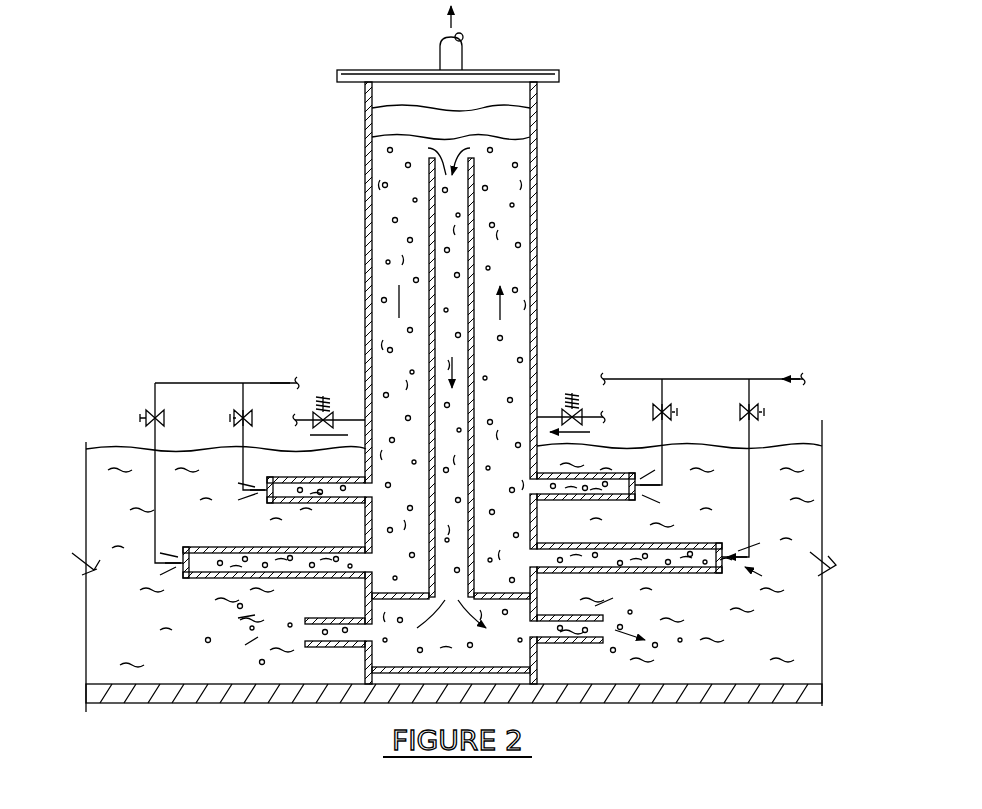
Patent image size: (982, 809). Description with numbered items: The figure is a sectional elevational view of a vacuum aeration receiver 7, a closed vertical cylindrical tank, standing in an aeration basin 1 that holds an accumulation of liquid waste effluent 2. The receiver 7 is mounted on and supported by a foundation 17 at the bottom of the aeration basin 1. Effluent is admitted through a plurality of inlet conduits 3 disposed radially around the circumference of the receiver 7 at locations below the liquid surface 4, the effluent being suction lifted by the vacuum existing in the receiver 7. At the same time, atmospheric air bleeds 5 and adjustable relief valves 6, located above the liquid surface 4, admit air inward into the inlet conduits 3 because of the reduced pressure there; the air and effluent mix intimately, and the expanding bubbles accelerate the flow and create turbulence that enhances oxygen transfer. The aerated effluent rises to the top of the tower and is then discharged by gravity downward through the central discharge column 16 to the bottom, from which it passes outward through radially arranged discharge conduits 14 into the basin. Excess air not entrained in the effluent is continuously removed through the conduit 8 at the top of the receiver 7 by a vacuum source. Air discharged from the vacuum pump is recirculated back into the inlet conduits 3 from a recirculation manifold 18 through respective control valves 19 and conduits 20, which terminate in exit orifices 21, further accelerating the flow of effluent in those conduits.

The aeration basin 1 is at (86, 517).
The liquid waste effluent 2 is at (222, 467).
The inlet conduit 3 is at (320, 541).
The liquid surface 4 is at (120, 447).
The atmospheric air bleed 5 is at (449, 418).
The adjustable relief valve 6 is at (323, 396).
The vacuum aeration receiver 7 is at (365, 222).
The conduit 8 is at (440, 55).
The discharge conduit 14 is at (322, 648).
The central discharge column 16 is at (473, 262).
The foundation 17 is at (530, 678).
The recirculation manifold 18 is at (262, 383).
The control valve 19 is at (150, 413).
The conduit 20 is at (152, 440).
The exit orifice 21 is at (291, 488).